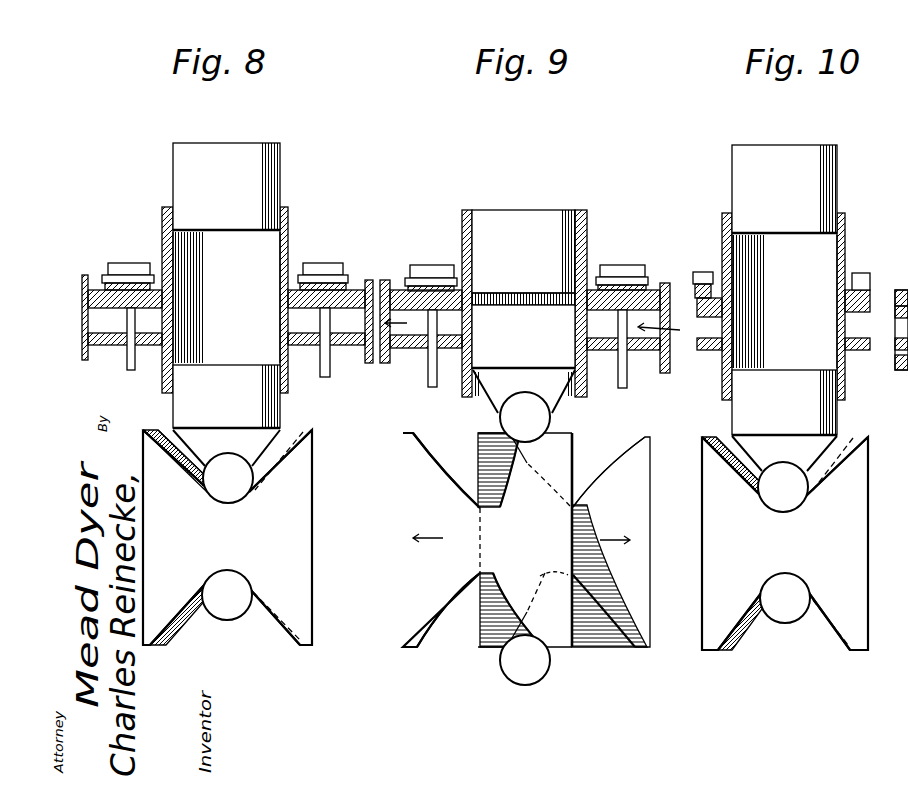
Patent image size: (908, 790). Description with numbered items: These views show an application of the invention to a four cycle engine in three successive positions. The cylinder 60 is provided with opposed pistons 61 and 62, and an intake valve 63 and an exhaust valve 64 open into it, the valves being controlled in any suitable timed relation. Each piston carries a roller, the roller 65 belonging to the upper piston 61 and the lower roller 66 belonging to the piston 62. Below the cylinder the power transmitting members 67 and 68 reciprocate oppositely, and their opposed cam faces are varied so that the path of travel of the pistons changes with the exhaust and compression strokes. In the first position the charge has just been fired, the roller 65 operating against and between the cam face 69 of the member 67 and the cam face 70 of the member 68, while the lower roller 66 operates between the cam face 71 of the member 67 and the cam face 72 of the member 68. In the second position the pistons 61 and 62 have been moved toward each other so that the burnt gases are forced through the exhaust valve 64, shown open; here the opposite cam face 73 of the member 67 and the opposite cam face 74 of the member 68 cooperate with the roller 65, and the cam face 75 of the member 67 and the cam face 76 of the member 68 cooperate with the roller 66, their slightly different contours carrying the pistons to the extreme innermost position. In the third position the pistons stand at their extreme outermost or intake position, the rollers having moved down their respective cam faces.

In FIG. 8, the cylinder 60 is at (290, 243).
In FIG. 9, the cylinder 60 is at (588, 232).
In FIG. 10, the cylinder 60 is at (846, 249).
In FIG. 8, the piston 61 is at (226, 186).
In FIG. 9, the piston 61 is at (523, 257).
In FIG. 10, the piston 61 is at (784, 189).
In FIG. 8, the piston 62 is at (226, 415).
In FIG. 9, the piston 62 is at (523, 359).
In FIG. 10, the piston 62 is at (784, 420).
In FIG. 8, the intake valve 63 is at (343, 295).
In FIG. 9, the intake valve 63 is at (625, 307).
In FIG. 8, the exhaust valve 64 is at (118, 298).
In FIG. 9, the exhaust valve 64 is at (440, 318).
In FIG. 8, the roller 65 is at (228, 478).
In FIG. 9, the roller 65 is at (525, 417).
In FIG. 10, the roller 65 is at (783, 487).
In FIG. 8, the roller 66 is at (227, 595).
In FIG. 9, the roller 66 is at (525, 660).
In FIG. 10, the roller 66 is at (785, 598).
In FIG. 8, the power transmitting member 67 is at (227, 537).
In FIG. 9, the power transmitting member 67 is at (403, 493).
In FIG. 10, the power transmitting member 67 is at (785, 543).
In FIG. 8, the power transmitting member 68 is at (178, 455).
In FIG. 9, the power transmitting member 68 is at (611, 540).
In FIG. 10, the power transmitting member 68 is at (733, 463).
In FIG. 8, the cam face 69 is at (161, 453).
In FIG. 9, the cam face 69 is at (440, 452).
In FIG. 10, the cam face 69 is at (731, 466).
In FIG. 8, the cam face 70 is at (305, 452).
In FIG. 9, the cam face 70 is at (620, 450).
In FIG. 10, the cam face 70 is at (840, 455).
In FIG. 8, the cam face 71 is at (193, 603).
In FIG. 9, the cam face 71 is at (450, 603).
In FIG. 10, the cam face 71 is at (745, 611).
In FIG. 8, the cam face 72 is at (300, 616).
In FIG. 9, the cam face 72 is at (612, 607).
In FIG. 10, the cam face 72 is at (830, 622).
In FIG. 8, the cam face 73 is at (267, 458).
In FIG. 9, the cam face 73 is at (533, 461).
In FIG. 10, the cam face 73 is at (830, 465).
In FIG. 8, the cam face 74 is at (187, 468).
In FIG. 9, the cam face 74 is at (515, 450).
In FIG. 10, the cam face 74 is at (730, 453).
In FIG. 8, the cam face 75 is at (265, 622).
In FIG. 9, the cam face 75 is at (527, 632).
In FIG. 10, the cam face 75 is at (827, 635).
In FIG. 8, the cam face 76 is at (193, 630).
In FIG. 9, the cam face 76 is at (520, 632).
In FIG. 10, the cam face 76 is at (738, 632).